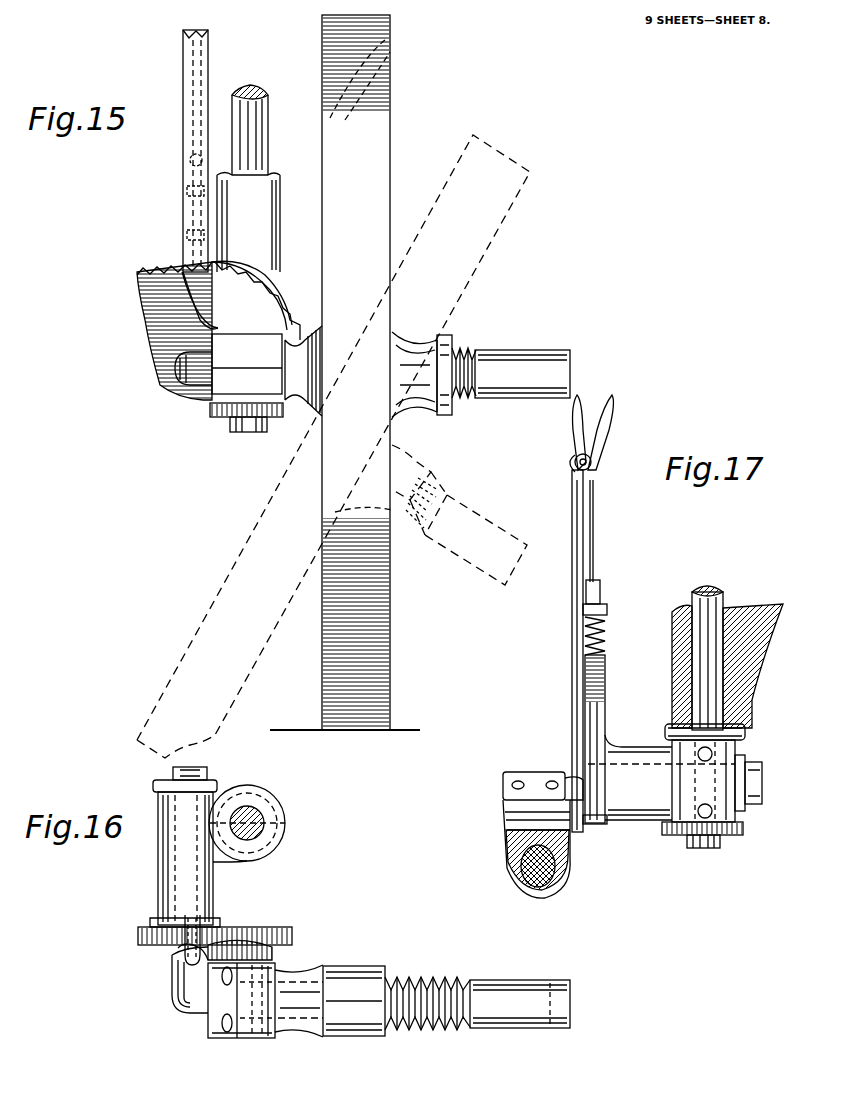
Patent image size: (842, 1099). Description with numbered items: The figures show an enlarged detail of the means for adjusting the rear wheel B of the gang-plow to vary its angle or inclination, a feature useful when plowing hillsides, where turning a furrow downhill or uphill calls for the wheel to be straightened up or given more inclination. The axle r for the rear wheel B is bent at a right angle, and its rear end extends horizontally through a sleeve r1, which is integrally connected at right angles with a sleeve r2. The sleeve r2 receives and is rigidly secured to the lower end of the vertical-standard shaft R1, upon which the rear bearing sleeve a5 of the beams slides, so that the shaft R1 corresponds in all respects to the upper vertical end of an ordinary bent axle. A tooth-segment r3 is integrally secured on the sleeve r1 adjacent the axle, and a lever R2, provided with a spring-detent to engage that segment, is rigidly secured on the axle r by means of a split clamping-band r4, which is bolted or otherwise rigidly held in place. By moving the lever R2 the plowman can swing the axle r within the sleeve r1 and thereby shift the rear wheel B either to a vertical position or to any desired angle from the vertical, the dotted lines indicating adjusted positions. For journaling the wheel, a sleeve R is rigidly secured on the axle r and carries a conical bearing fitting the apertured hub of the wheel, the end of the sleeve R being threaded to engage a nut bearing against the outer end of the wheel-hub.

In FIG. 15, the rear wheel B is at (370, 183).
In FIG. 15, the sleeve R is at (305, 352).
In FIG. 17, the sleeve R is at (557, 772).
In FIG. 16, the sleeve R is at (293, 1034).
In FIG. 15, the vertical-standard shaft R1 is at (257, 433).
In FIG. 17, the vertical-standard shaft R1 is at (727, 604).
In FIG. 16, the vertical-standard shaft R1 is at (262, 826).
In FIG. 15, the lever R2 is at (183, 183).
In FIG. 17, the lever R2 is at (577, 582).
In FIG. 16, the lever R2 is at (178, 958).
In FIG. 15, the axle r is at (188, 373).
In FIG. 17, the axle r is at (760, 773).
In FIG. 16, the axle r is at (175, 972).
In FIG. 17, the sleeve r1 is at (632, 818).
In FIG. 16, the sleeve r1 is at (208, 896).
In FIG. 15, the sleeve r2 is at (240, 408).
In FIG. 17, the sleeve r2 is at (722, 815).
In FIG. 16, the sleeve r2 is at (267, 795).
In FIG. 15, the tooth-segment r3 is at (150, 322).
In FIG. 16, the tooth-segment r3 is at (267, 927).
In FIG. 17, the split clamping-band r4 is at (505, 803).
In FIG. 16, the split clamping-band r4 is at (250, 1037).
In FIG. 15, the bearing sleeve a5 is at (262, 212).
In FIG. 17, the bearing sleeve a5 is at (682, 673).